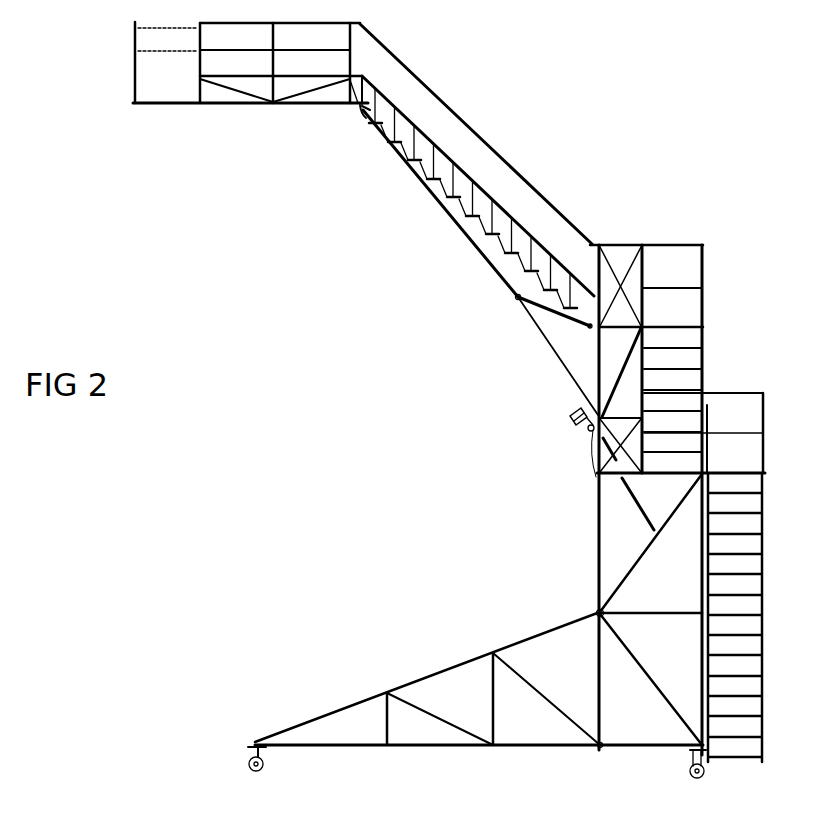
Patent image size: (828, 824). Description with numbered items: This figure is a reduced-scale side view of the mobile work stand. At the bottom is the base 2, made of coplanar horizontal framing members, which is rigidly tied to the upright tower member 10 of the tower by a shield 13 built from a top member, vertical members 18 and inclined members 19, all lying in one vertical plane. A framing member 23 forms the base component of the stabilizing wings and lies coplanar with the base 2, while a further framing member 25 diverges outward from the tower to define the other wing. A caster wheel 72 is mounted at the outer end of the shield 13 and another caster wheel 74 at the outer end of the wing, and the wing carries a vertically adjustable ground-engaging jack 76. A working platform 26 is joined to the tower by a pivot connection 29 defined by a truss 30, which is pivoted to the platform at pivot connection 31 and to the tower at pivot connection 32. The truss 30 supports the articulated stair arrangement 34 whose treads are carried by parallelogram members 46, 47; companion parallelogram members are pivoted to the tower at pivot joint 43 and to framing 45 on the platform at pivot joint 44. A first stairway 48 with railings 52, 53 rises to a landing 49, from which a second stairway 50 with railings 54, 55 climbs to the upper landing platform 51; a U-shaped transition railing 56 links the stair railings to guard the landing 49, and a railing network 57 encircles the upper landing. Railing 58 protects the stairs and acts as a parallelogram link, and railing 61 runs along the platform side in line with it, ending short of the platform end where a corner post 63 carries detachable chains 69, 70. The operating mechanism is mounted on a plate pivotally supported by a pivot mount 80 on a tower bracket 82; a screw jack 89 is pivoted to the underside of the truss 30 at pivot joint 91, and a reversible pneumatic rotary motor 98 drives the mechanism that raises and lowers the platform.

The base 2 is at (466, 752).
The tower member 10 is at (596, 541).
The shield 13 is at (438, 668).
The vertical members 18 is at (388, 728).
The inclined members 19 is at (440, 713).
The framing member 23 is at (685, 736).
The framing member 25 is at (698, 692).
The working platform 26 is at (172, 107).
The pivot connection 29 is at (386, 160).
The truss 30 is at (450, 229).
The pivot connection 31 is at (362, 108).
The pivot connection 32 is at (590, 328).
The articulated stair arrangement 34 is at (408, 142).
The pivot joint 43 is at (598, 290).
The pivot joint 44 is at (365, 78).
The framing 45 is at (330, 76).
The parallelogram member 46 is at (451, 158).
The parallelogram member 47 is at (466, 186).
The first stairway 48 is at (752, 594).
The landing 49 is at (765, 473).
The second stairway 50 is at (704, 363).
The landing platform 51 is at (693, 326).
The railing 52 is at (764, 659).
The railing 53 is at (710, 688).
The railing 54 is at (672, 360).
The railing 55 is at (707, 389).
The transition railing 56 is at (765, 433).
The railing network 57 is at (704, 276).
The railing 58 is at (532, 192).
The railing 61 is at (285, 23).
The corner post 63 is at (134, 84).
The detachable chain 69 is at (160, 29).
The detachable chain 70 is at (158, 52).
The caster wheel 72 is at (266, 768).
The caster wheel 74 is at (704, 776).
The jack 76 is at (689, 769).
The pivot mount 80 is at (586, 431).
The tower bracket 82 is at (595, 450).
The screw jack 89 is at (537, 336).
The pivot joint 91 is at (515, 297).
The rotary motor 98 is at (572, 424).